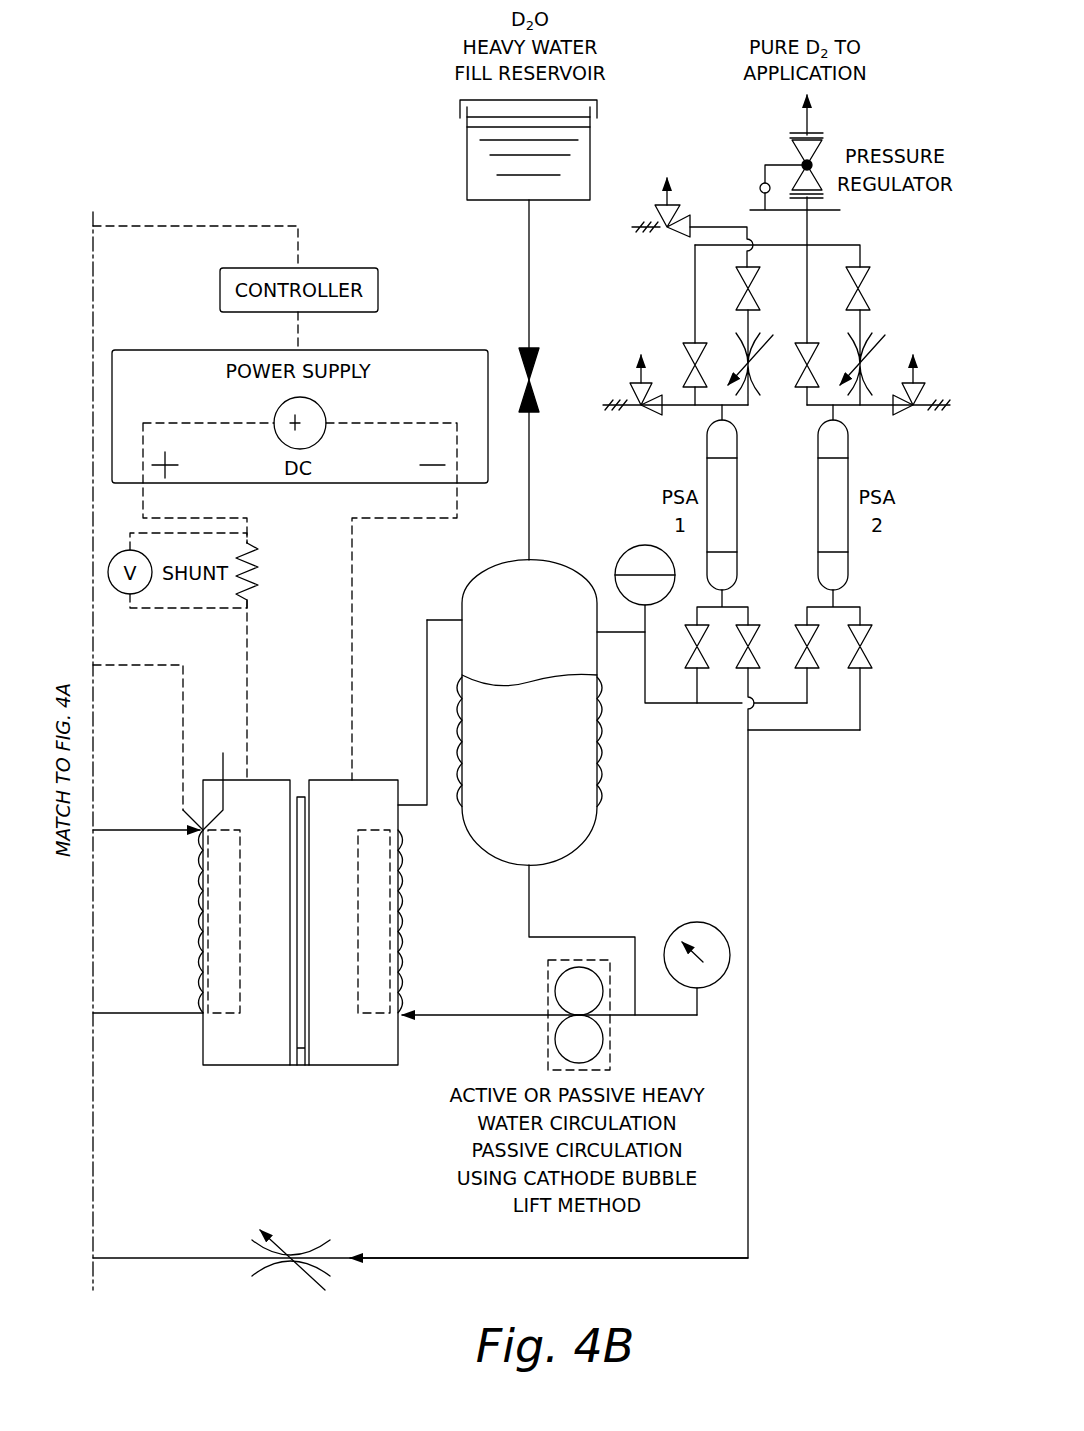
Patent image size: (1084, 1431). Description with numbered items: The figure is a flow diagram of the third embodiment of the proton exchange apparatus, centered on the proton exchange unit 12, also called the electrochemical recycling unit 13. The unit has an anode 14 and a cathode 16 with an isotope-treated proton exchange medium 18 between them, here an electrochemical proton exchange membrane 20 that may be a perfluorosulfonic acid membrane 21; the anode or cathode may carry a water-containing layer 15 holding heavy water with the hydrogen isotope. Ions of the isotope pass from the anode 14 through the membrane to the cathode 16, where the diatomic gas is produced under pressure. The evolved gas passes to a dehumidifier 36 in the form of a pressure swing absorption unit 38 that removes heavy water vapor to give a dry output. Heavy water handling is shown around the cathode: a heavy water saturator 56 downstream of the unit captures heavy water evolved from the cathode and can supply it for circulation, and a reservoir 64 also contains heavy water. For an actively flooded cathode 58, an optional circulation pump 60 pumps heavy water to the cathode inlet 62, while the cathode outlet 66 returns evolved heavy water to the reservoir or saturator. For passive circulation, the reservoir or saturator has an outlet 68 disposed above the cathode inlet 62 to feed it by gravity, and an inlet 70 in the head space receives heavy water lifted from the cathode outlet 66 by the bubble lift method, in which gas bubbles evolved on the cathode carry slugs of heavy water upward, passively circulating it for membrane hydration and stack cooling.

The proton exchange unit 12 is at (290, 925).
The electrochemical recycling unit 13 is at (216, 1068).
The anode 14 is at (200, 888).
The water-containing layer 15 is at (358, 893).
The cathode 16 is at (410, 940).
The isotope-treated proton exchange medium 18 is at (300, 1058).
The electrochemical proton exchange membrane 20 is at (298, 812).
The perfluorosulfonic acid membrane 21 is at (312, 838).
The dehumidifier 36 is at (816, 446).
The pressure swing absorption unit 38 is at (835, 568).
The heavy water saturator 56 is at (598, 745).
The actively flooded cathode 58 is at (385, 1068).
The circulation pump 60 is at (612, 1043).
The cathode inlet 62 is at (415, 1005).
The reservoir 64 is at (464, 162).
The cathode outlet 66 is at (427, 775).
The outlet 68 is at (529, 870).
The inlet 70 is at (462, 615).